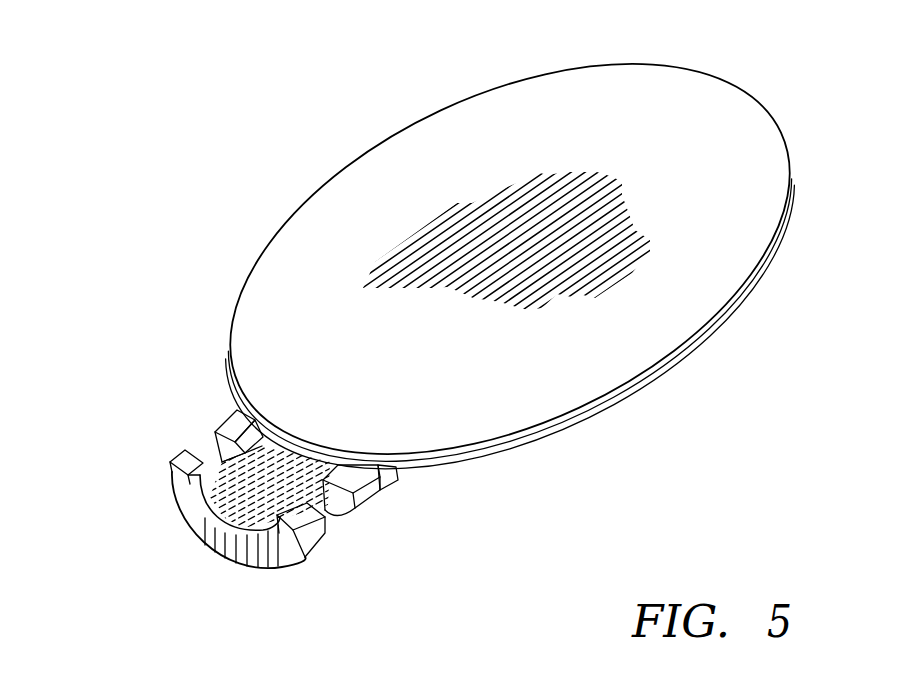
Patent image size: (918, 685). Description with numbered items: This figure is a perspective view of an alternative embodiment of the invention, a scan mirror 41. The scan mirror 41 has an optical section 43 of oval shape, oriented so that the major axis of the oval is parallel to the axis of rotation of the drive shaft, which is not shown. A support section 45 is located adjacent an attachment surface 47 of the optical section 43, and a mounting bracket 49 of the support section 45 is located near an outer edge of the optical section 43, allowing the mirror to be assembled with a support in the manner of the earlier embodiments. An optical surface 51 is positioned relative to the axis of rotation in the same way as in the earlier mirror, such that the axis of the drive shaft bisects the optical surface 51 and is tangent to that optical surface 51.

The scan mirror 41 is at (125, 72).
The optical section 43 is at (330, 180).
The support section 45 is at (236, 558).
The attachment surface 47 is at (695, 342).
The mounting bracket 49 is at (182, 471).
The optical surface 51 is at (483, 133).